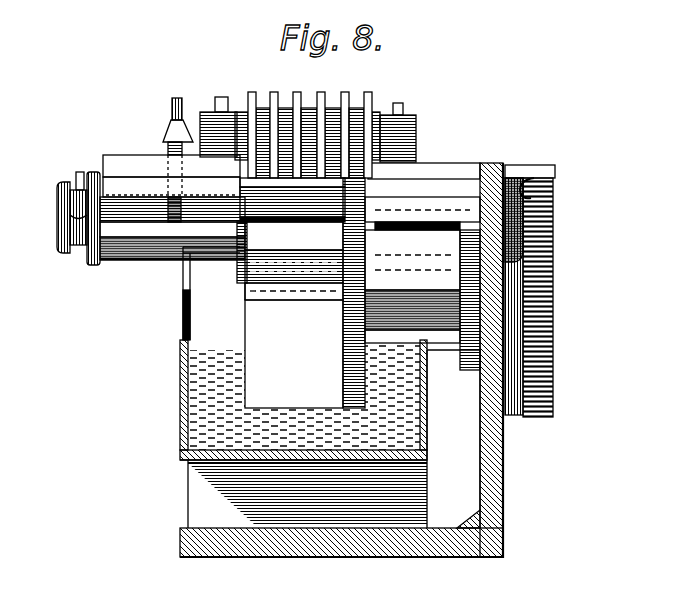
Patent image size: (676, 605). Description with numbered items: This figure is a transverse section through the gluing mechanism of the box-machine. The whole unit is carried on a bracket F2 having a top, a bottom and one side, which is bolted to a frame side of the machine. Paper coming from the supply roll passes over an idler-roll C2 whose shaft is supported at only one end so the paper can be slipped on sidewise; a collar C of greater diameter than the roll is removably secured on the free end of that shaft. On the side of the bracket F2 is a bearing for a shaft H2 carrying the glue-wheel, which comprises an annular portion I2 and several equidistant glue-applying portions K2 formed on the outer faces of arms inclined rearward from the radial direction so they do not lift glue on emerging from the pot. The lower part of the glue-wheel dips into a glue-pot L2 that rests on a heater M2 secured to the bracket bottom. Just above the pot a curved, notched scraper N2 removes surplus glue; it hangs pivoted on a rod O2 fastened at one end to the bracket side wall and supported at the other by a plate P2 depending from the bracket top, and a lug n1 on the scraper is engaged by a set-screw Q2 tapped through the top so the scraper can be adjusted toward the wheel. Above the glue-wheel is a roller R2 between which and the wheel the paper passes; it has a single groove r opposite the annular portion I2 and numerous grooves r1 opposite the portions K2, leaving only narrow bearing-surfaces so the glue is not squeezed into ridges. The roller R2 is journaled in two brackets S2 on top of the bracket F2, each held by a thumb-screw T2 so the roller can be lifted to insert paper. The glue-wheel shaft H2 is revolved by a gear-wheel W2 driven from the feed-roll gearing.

The bracket F2 is at (515, 473).
The plate P2 is at (102, 164).
The idler-roll C2 is at (133, 260).
The collar C is at (58, 238).
The rod O2 is at (450, 154).
The lug or projection n1 is at (168, 195).
The set-screw Q2 is at (174, 115).
The bracket S2 is at (210, 110).
The thumb-screw T2 is at (246, 92).
The grooves r1 is at (278, 90).
The groove r is at (353, 107).
The roller R2 is at (371, 106).
The annular portion I2 is at (360, 293).
The glue-applying portions K2 is at (294, 354).
The scraper N2 is at (236, 268).
The shaft H2 is at (263, 317).
The glue-pot L2 is at (182, 433).
The heater M2 is at (197, 505).
The gear-wheel W2 is at (547, 327).